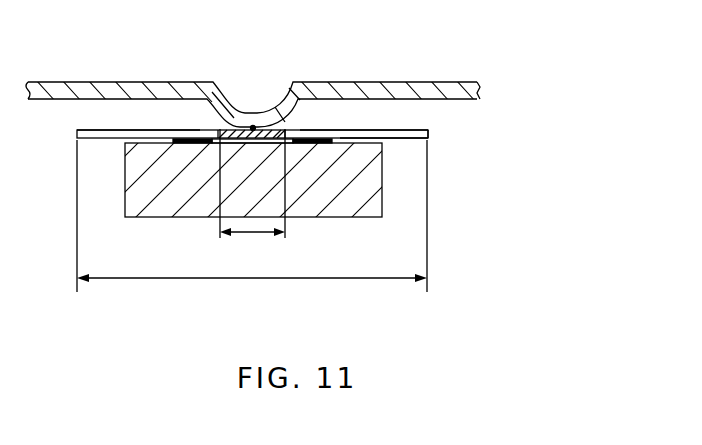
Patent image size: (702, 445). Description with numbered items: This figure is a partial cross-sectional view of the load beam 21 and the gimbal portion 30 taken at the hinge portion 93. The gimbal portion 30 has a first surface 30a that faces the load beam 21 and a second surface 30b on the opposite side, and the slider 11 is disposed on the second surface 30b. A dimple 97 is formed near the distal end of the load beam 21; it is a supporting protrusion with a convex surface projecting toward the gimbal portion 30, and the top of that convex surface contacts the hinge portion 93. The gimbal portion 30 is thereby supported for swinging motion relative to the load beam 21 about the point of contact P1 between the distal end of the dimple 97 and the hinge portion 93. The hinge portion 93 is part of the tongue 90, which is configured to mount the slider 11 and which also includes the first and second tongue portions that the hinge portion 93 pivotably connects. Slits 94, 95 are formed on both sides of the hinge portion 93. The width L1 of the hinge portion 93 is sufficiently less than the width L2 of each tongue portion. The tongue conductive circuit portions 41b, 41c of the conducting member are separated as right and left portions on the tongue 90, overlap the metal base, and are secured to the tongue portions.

The load beam 21 is at (403, 94).
The dimple 97 is at (251, 114).
The slit 94 is at (367, 130).
The hinge portion 93 is at (235, 131).
The first surface 30a is at (352, 130).
The slit 95 is at (150, 130).
The tongue conductive circuit portion 41c is at (190, 139).
The tongue conductive circuit portion 41b is at (318, 142).
The tongue 90 is at (102, 151).
The slider 11 is at (349, 209).
The second surface 30b is at (397, 141).
The gimbal portion 30 is at (453, 135).
The point of contact P1 is at (253, 130).
The width of hinge portion L1 is at (255, 236).
The width of tongue portion L2 is at (225, 280).